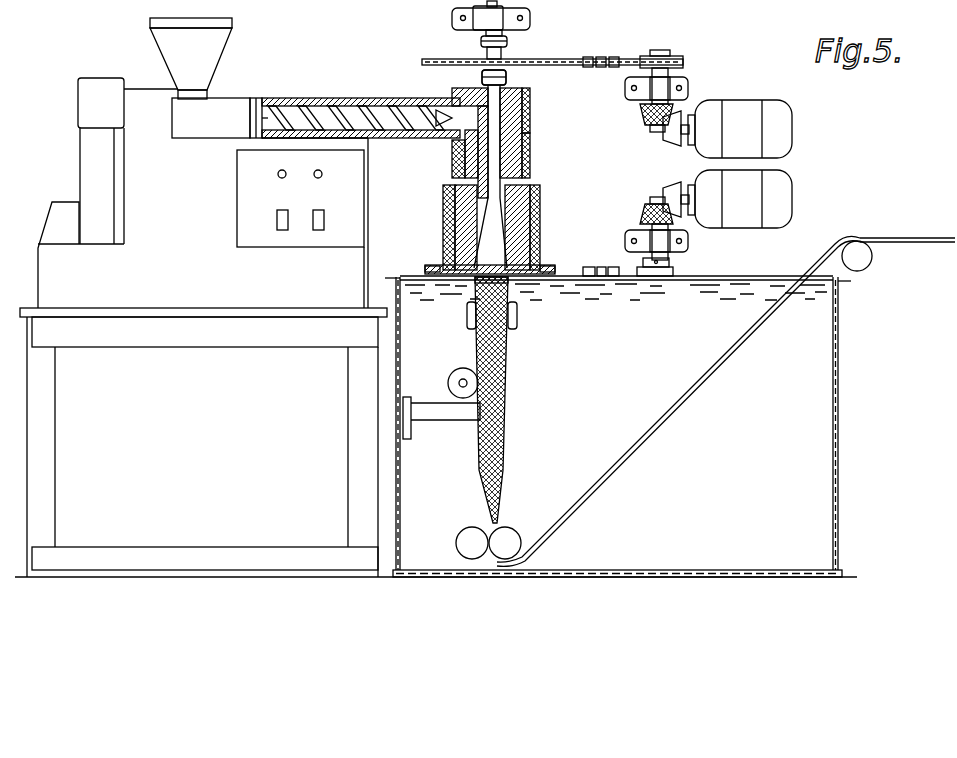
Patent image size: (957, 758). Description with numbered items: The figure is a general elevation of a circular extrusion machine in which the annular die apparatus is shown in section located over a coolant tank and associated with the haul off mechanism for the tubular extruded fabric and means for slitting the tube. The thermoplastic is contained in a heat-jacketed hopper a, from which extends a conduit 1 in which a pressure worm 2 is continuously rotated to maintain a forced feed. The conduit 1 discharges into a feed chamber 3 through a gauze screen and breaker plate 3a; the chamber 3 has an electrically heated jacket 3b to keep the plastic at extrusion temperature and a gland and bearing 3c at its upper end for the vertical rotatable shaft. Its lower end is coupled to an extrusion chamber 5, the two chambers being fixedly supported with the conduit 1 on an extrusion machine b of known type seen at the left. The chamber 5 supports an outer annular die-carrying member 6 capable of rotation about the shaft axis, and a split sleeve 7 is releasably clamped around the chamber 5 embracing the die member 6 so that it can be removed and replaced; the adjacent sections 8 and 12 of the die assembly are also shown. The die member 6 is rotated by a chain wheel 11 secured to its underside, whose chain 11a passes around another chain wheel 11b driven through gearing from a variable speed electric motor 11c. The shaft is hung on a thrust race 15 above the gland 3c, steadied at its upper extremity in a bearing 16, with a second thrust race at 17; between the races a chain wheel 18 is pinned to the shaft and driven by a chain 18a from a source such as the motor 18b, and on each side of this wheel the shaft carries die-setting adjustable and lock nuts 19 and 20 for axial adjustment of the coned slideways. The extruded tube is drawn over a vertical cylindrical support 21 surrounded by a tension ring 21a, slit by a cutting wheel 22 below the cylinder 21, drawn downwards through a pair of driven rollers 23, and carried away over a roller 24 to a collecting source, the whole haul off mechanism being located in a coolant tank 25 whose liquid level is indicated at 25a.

The conduit 1 is at (318, 100).
The pressure worm 2 is at (365, 115).
The feed chamber 3 is at (510, 125).
The gauze screen and breaker plate 3a is at (456, 120).
The electrically heated jacket 3b is at (530, 150).
The gland and bearing 3c is at (530, 102).
The extrusion chamber 5 is at (520, 200).
The outer annular die-carrying member 6 is at (540, 253).
The split cylinder or sleeve 7 is at (445, 196).
The heating jacket 8 is at (540, 216).
The chain wheel 11 is at (428, 268).
The chain 11a is at (592, 265).
The chain wheel 11b is at (672, 260).
The variable speed electric motor 11c is at (770, 200).
The die insert 12 is at (457, 228).
The ball or roller thrust race 15 is at (503, 88).
The bearing 16 is at (472, 16).
The second thrust race 17 is at (506, 32).
The chain wheel 18 is at (425, 62).
The chain 18a is at (586, 60).
The drive cylinder 18b is at (735, 120).
The die-setting adjustable and lock nuts 19 is at (481, 41).
The die-setting adjustable and lock nuts 20 is at (480, 77).
The vertical cylindrical support 21 is at (506, 350).
The tension ring 21a is at (519, 312).
The cutting or slitting wheel 22 is at (457, 378).
The pair of rollers 23 is at (508, 537).
The roller 24 is at (862, 261).
The coolant tank 25 is at (838, 340).
The liquid level 25a is at (748, 278).
The hopper a is at (198, 65).
The extrusion machine b is at (186, 208).